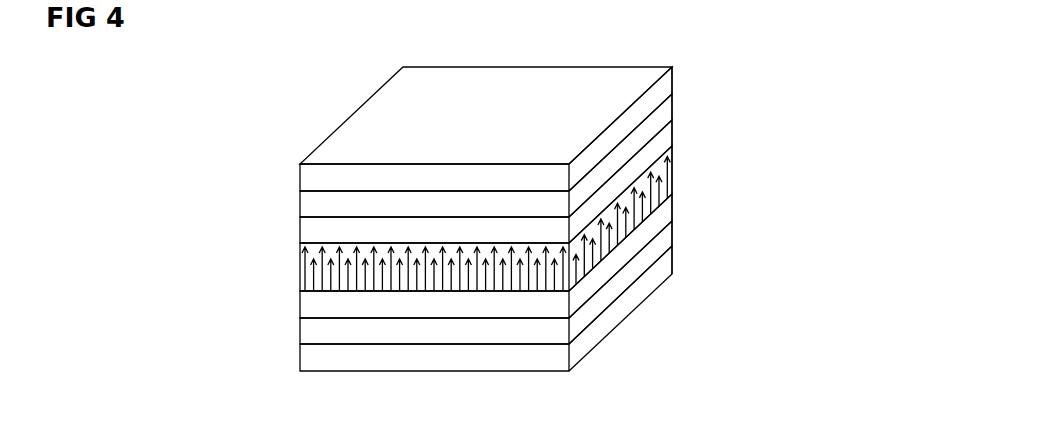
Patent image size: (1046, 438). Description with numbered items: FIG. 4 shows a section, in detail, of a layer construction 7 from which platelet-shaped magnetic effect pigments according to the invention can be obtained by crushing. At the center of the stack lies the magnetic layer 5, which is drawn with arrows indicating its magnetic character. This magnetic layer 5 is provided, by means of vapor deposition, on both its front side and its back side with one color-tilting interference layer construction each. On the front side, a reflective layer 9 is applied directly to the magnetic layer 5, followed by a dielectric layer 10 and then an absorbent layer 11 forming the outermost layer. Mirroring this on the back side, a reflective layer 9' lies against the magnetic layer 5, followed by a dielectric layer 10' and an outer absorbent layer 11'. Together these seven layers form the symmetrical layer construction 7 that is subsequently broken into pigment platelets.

The layer construction 7 is at (776, 75).
The absorbent layer 11 is at (530, 109).
The dielectric layer 10 is at (527, 146).
The reflective layer 9 is at (520, 177).
The magnetic layer 5 is at (672, 172).
The reflective layer 9' is at (524, 256).
The dielectric layer 10' is at (537, 282).
The absorbent layer 11' is at (536, 308).